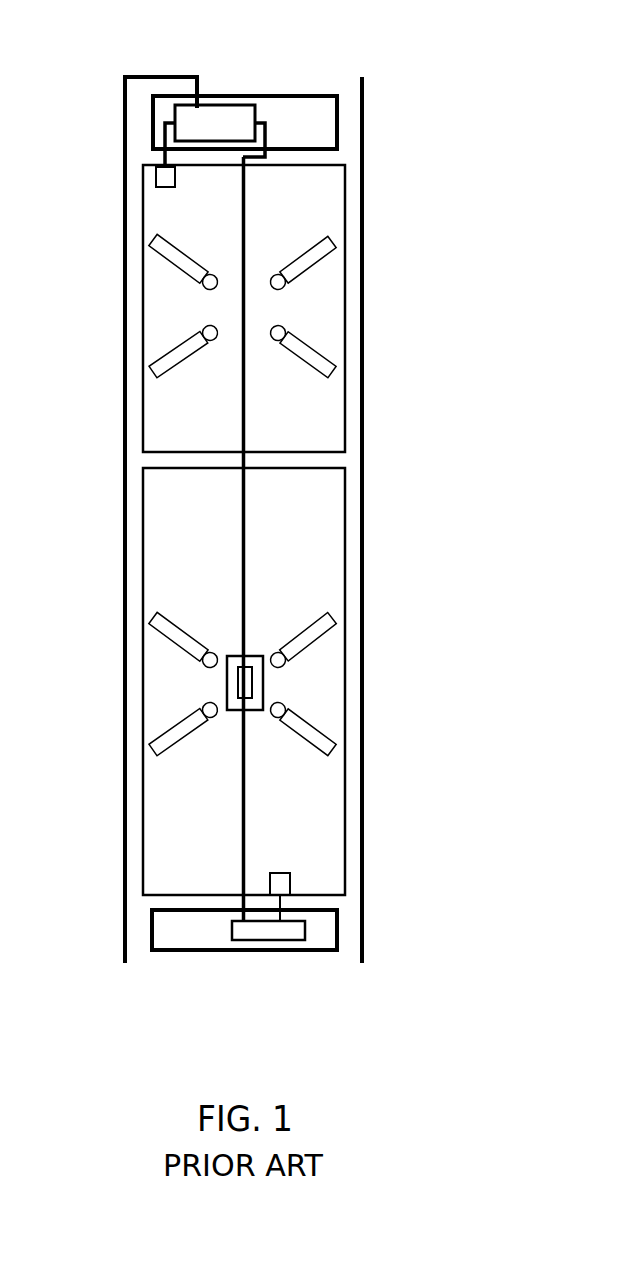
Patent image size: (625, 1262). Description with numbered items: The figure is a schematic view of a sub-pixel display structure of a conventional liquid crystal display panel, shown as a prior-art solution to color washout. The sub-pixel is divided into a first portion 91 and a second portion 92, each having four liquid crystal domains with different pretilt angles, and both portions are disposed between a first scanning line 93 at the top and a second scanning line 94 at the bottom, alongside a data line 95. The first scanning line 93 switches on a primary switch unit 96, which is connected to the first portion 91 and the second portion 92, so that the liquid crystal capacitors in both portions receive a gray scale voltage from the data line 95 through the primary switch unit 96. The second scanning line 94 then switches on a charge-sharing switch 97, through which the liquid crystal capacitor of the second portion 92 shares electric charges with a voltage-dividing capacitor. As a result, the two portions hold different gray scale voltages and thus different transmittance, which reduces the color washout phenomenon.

The first portion 91 is at (345, 238).
The second portion 92 is at (345, 547).
The first scanning line 93 is at (323, 96).
The second scanning line 94 is at (298, 950).
The data line 95 is at (125, 440).
The primary switch unit 96 is at (262, 111).
The charge-sharing switch 97 is at (228, 931).